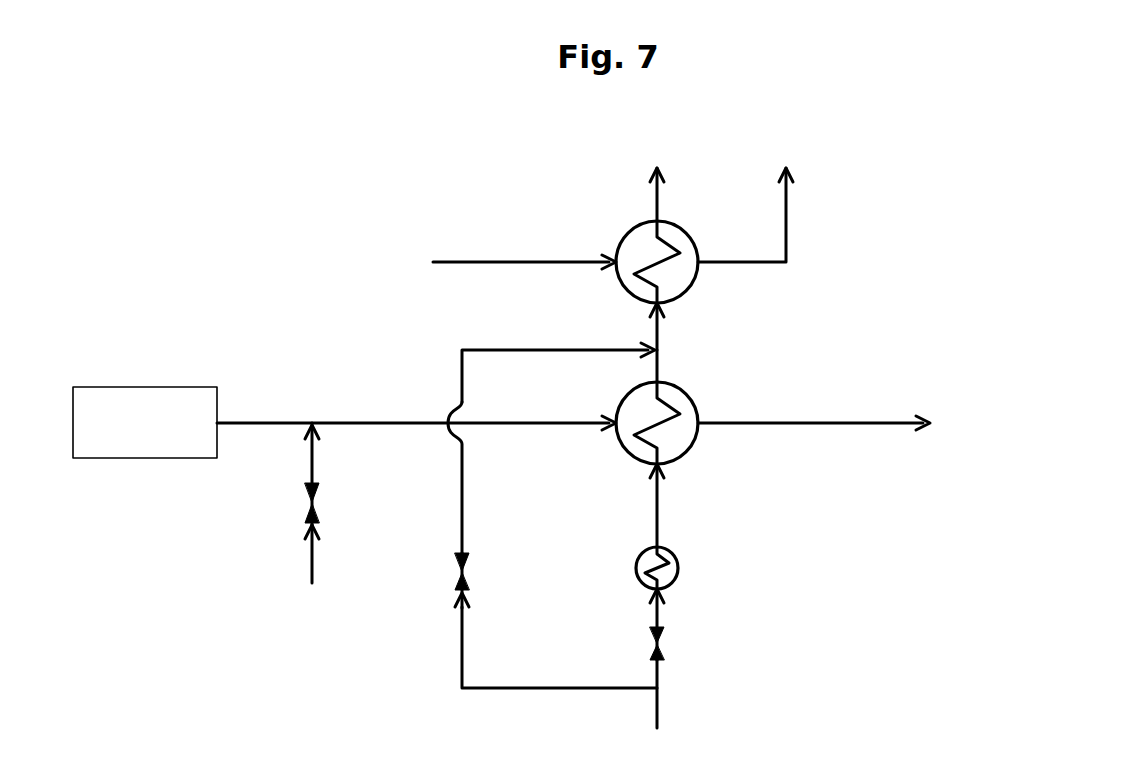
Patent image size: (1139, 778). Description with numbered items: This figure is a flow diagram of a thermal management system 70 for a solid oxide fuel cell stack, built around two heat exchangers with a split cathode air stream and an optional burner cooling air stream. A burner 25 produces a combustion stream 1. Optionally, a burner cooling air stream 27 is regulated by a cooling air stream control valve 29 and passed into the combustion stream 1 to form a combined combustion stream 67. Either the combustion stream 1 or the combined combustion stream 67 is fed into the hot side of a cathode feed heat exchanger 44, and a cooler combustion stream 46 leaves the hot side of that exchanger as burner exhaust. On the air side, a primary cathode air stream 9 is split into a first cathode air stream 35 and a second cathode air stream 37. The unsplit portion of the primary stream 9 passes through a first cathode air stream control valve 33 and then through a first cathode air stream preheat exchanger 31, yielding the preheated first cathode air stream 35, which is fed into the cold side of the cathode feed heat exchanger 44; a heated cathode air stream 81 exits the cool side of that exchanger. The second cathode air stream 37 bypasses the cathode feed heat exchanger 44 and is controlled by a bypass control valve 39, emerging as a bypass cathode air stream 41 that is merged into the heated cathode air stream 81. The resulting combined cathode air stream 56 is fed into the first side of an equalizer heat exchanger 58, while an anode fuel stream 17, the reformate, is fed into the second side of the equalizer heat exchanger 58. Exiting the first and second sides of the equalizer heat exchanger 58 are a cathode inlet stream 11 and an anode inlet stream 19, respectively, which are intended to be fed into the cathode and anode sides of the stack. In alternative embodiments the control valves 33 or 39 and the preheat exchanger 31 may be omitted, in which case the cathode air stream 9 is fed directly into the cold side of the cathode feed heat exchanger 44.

The thermal management system 70 is at (1033, 203).
The burner 25 is at (100, 379).
The combustion stream 1 is at (265, 415).
The combined combustion stream 67 is at (398, 416).
The cooling air stream control valve 29 is at (323, 507).
The burner cooling air stream 27 is at (302, 556).
The bypass cathode air stream 41 is at (488, 343).
The bypass control valve 39 is at (450, 577).
The second cathode air stream 37 is at (543, 679).
The primary cathode air stream 9 is at (668, 713).
The first cathode air stream control valve 33 is at (668, 643).
The first cathode air stream preheat exchanger 31 is at (687, 567).
The first cathode air stream 35 is at (662, 523).
The cathode feed heat exchanger 44 is at (699, 444).
The heated cathode air stream 81 is at (665, 369).
The combined cathode air stream 56 is at (665, 331).
The equalizer heat exchanger 58 is at (699, 276).
The cathode inlet stream 11 is at (646, 189).
The anode fuel stream 17 is at (479, 252).
The anode inlet stream 19 is at (776, 181).
The cooler combustion stream 46 is at (851, 416).